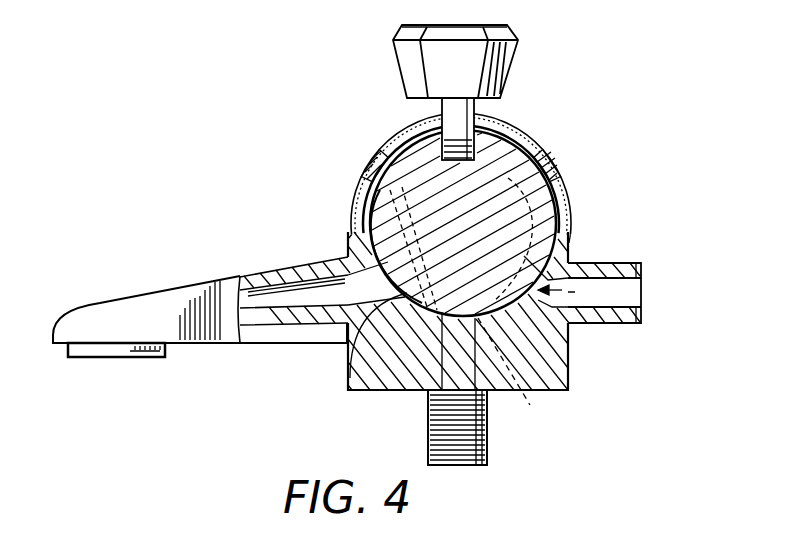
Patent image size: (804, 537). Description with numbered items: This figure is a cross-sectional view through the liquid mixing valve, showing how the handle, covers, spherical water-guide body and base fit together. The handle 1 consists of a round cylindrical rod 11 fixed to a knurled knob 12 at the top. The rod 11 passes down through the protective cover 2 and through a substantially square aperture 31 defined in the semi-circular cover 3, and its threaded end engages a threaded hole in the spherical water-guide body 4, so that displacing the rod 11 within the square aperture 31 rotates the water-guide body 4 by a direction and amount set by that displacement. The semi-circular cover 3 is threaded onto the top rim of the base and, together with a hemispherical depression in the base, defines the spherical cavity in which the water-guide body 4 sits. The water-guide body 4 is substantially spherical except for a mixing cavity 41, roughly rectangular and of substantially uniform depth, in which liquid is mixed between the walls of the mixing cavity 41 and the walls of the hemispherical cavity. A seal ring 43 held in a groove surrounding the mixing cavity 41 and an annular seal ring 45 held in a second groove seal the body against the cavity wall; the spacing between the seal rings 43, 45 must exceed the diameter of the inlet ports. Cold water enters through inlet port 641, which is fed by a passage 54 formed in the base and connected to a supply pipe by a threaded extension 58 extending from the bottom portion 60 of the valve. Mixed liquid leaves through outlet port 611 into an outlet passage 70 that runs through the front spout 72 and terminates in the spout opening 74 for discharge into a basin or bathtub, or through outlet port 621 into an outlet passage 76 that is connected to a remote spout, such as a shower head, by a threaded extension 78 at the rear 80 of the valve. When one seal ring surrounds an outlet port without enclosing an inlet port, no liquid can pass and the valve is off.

The handle 1 is at (512, 68).
The knurled knob 12 is at (510, 28).
The round cylindrical rod 11 is at (455, 107).
The protective cover 2 is at (515, 185).
The semi-circular cover 3 is at (357, 205).
The square aperture 31 is at (490, 130).
The water-guide body 4 is at (562, 152).
The seal ring 43 is at (372, 160).
The annular seal ring 45 is at (560, 195).
The mixing cavity 41 is at (350, 365).
The passage 54 is at (422, 395).
The threaded extension 58 is at (478, 448).
The bottom portion 60 is at (352, 392).
The inlet port 641 is at (530, 374).
The outlet passage 70 is at (277, 285).
The outlet port 611 is at (332, 265).
The front spout 72 is at (175, 283).
The spout opening 74 is at (95, 355).
The outlet passage 76 is at (615, 298).
The threaded extension 78 is at (632, 261).
The outlet port 621 is at (607, 287).
The rear 80 is at (570, 227).